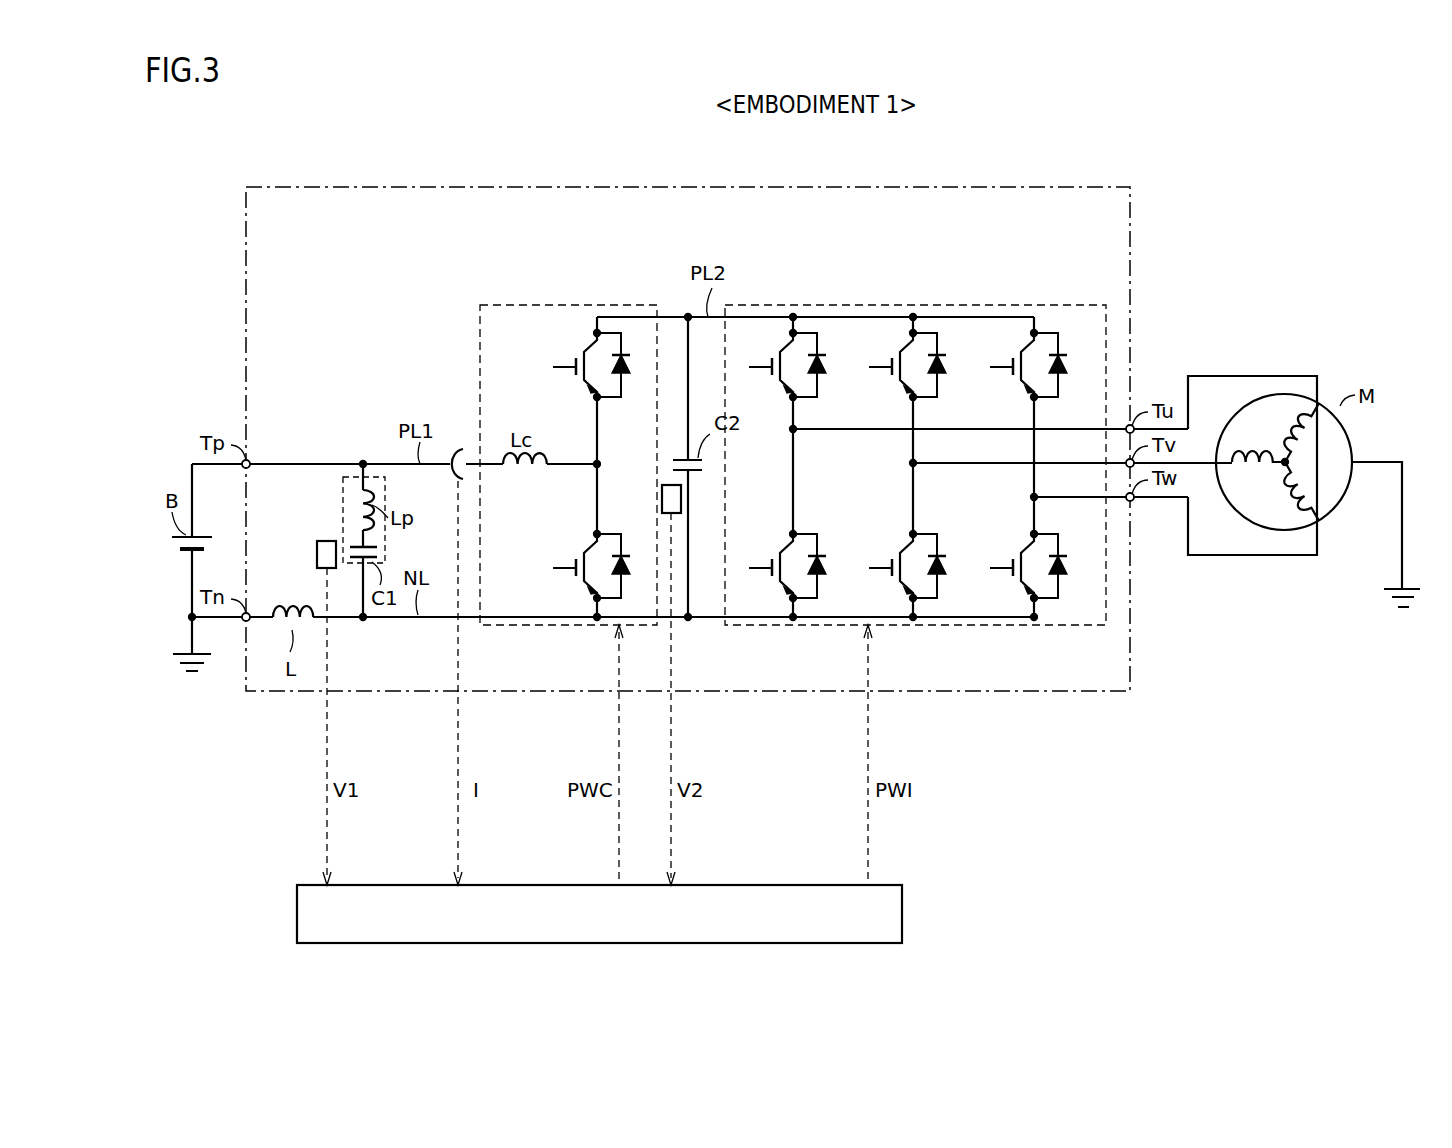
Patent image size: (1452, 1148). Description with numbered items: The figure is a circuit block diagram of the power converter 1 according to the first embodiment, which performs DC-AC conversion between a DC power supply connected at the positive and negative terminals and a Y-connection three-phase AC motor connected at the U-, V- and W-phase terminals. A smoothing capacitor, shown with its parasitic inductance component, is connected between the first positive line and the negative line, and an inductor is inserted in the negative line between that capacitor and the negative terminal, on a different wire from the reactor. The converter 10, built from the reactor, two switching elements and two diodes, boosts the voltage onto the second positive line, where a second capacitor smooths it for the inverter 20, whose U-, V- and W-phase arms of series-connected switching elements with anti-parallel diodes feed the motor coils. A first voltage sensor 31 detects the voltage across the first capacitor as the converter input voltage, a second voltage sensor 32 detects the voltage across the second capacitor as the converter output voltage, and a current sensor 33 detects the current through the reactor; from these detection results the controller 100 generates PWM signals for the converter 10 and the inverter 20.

The power converter 1 is at (1012, 187).
The converter 10 is at (605, 305).
The inverter 20 is at (1055, 305).
The voltage sensor 31 is at (317, 552).
The voltage sensor 32 is at (668, 485).
The current sensor 33 is at (457, 449).
The controller 100 is at (772, 885).